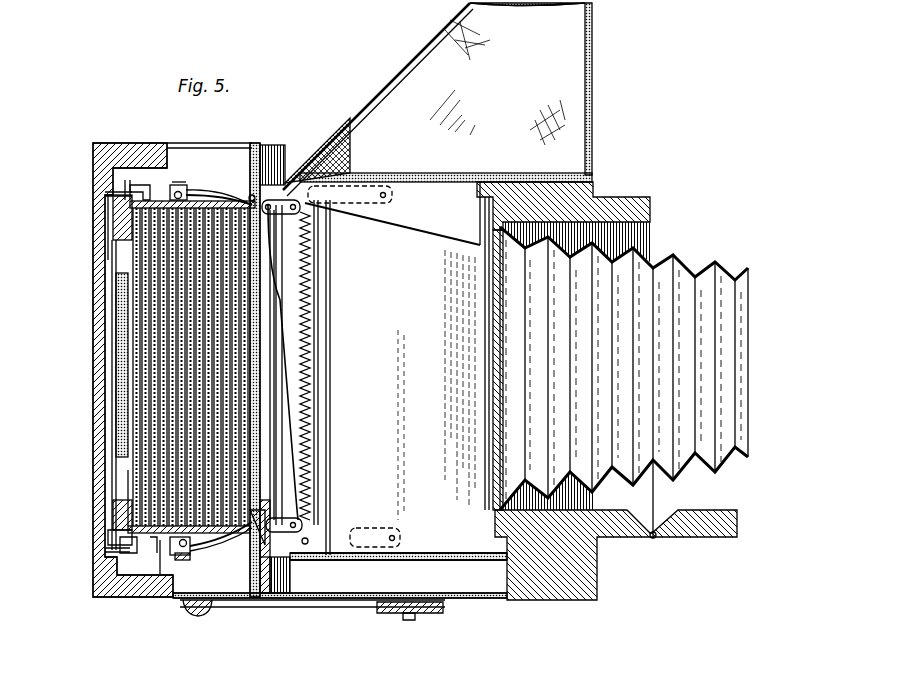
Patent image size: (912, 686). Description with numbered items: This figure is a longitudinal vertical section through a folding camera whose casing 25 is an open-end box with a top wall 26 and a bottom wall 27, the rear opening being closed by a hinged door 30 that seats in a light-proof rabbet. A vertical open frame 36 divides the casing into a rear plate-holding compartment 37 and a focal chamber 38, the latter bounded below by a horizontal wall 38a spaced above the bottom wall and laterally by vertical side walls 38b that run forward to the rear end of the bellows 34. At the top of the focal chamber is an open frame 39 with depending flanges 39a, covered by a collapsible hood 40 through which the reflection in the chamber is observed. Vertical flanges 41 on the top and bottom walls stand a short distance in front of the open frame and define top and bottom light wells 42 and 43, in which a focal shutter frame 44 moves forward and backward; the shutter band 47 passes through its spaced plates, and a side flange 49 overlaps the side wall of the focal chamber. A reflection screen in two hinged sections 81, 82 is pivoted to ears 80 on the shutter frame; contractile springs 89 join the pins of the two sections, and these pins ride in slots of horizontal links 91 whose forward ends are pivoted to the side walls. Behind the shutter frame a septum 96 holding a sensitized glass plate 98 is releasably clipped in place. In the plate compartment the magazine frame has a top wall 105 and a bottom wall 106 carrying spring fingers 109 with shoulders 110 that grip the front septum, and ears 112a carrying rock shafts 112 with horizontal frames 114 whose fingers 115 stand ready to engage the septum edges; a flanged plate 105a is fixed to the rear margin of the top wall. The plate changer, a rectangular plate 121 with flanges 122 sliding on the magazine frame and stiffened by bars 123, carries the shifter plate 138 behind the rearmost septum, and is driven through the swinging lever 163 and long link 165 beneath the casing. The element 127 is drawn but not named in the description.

The casing 25 is at (260, 133).
The top wall 26 is at (212, 139).
The bottom wall 27 is at (338, 606).
The hinged door 30 is at (93, 438).
The bellows 34 is at (683, 258).
The open frame 36 is at (255, 575).
The plate-holding compartment 37 is at (165, 573).
The focal chamber 38 is at (482, 567).
The horizontal wall 38a is at (398, 570).
The vertical side wall 38b is at (330, 323).
The open frame 39 is at (415, 228).
The depending flanges 39a is at (430, 242).
The collapsible hood 40 is at (590, 97).
The vertical flanges 41 is at (286, 162).
The top light well 42 is at (276, 160).
The bottom light well 43 is at (275, 600).
The focal shutter frame 44 is at (268, 547).
The shutter band 47 is at (280, 385).
The side flange 49 is at (318, 355).
The ears 80 is at (295, 212).
The top screen section 81 is at (282, 300).
The bottom screen section 82 is at (274, 430).
The contractile springs 89 is at (308, 280).
The horizontal links 91 is at (376, 185).
The septum 96 is at (130, 475).
The sensitized glass plate 98 is at (128, 488).
The top wall of magazine frame 105 is at (144, 187).
The flanged plate 105a is at (128, 196).
The bottom wall of magazine frame 106 is at (150, 556).
The spring fingers 109 is at (194, 558).
The shoulders 110 is at (168, 568).
The rock shafts 112 is at (181, 188).
The ears 112a is at (170, 194).
The horizontal frames 114 is at (178, 190).
The fingers 115 is at (208, 174).
The rectangular plate 121 is at (112, 318).
The flanges 122 is at (128, 197).
The bars 123 is at (120, 220).
The housing 127 is at (108, 163).
The shifter plate 138 is at (125, 352).
The horizontally swinging lever 163 is at (265, 607).
The long link 165 is at (192, 616).